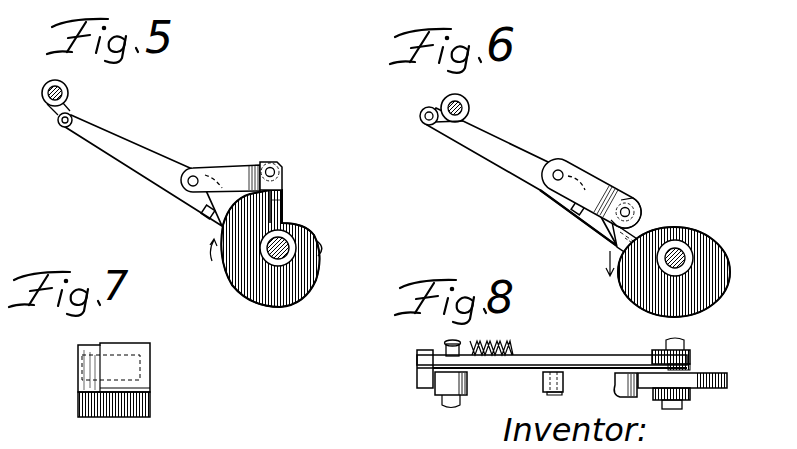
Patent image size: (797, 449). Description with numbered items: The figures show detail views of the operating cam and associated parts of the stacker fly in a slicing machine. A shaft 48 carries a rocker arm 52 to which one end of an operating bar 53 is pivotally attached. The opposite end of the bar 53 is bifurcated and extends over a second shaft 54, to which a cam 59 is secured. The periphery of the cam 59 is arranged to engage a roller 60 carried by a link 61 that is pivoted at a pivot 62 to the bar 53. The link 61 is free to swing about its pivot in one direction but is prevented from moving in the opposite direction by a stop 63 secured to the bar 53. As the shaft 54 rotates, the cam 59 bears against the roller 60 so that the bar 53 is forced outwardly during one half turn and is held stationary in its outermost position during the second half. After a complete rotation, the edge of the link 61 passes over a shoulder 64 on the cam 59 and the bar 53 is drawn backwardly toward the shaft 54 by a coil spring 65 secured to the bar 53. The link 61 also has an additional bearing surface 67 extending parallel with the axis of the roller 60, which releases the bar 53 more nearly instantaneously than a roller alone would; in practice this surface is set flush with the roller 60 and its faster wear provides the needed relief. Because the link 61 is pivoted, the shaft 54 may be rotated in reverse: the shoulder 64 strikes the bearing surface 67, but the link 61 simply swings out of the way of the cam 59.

In FIG. 5, the shaft 48 is at (67, 92).
In FIG. 6, the shaft 48 is at (470, 109).
In FIG. 8, the shaft 48 is at (445, 402).
In FIG. 5, the rocker arm 52 is at (73, 112).
In FIG. 6, the rocker arm 52 is at (442, 97).
In FIG. 8, the rocker arm 52 is at (433, 386).
In FIG. 5, the operating bar 53 is at (137, 150).
In FIG. 6, the operating bar 53 is at (522, 160).
In FIG. 8, the operating bar 53 is at (537, 359).
In FIG. 5, the shaft 54 is at (284, 245).
In FIG. 6, the shaft 54 is at (676, 253).
In FIG. 8, the shaft 54 is at (683, 343).
In FIG. 5, the cam 59 is at (261, 296).
In FIG. 6, the cam 59 is at (641, 305).
In FIG. 8, the cam 59 is at (708, 375).
In FIG. 5, the roller 60 is at (276, 167).
In FIG. 6, the roller 60 is at (636, 206).
In FIG. 7, the roller 60 is at (134, 345).
In FIG. 8, the roller 60 is at (617, 384).
In FIG. 5, the link 61 is at (229, 161).
In FIG. 6, the link 61 is at (587, 187).
In FIG. 8, the link 61 is at (577, 395).
In FIG. 5, the pivot 62 is at (195, 177).
In FIG. 6, the pivot 62 is at (562, 170).
In FIG. 8, the pivot 62 is at (544, 389).
In FIG. 5, the stop 63 is at (205, 218).
In FIG. 6, the stop 63 is at (574, 212).
In FIG. 5, the shoulder 64 is at (283, 201).
In FIG. 6, the shoulder 64 is at (634, 227).
In FIG. 8, the coil spring 65 is at (512, 350).
In FIG. 5, the additional bearing surface 67 is at (283, 183).
In FIG. 6, the additional bearing surface 67 is at (610, 236).
In FIG. 7, the additional bearing surface 67 is at (140, 405).